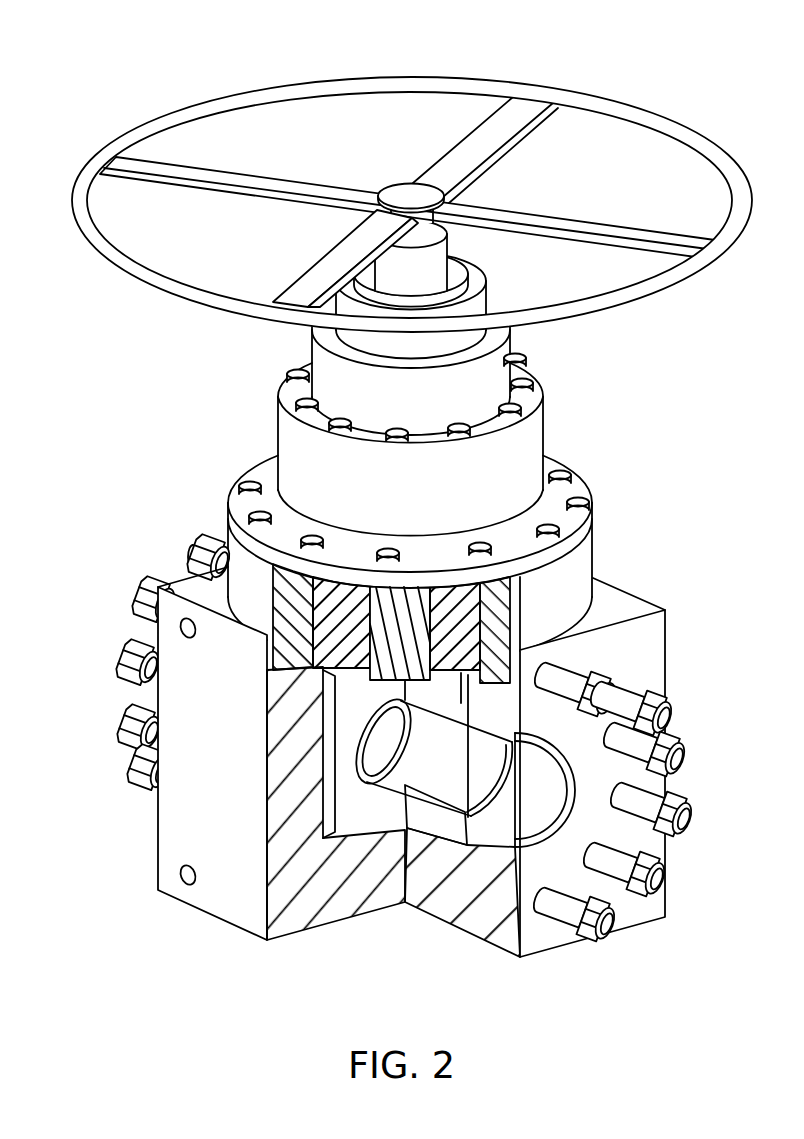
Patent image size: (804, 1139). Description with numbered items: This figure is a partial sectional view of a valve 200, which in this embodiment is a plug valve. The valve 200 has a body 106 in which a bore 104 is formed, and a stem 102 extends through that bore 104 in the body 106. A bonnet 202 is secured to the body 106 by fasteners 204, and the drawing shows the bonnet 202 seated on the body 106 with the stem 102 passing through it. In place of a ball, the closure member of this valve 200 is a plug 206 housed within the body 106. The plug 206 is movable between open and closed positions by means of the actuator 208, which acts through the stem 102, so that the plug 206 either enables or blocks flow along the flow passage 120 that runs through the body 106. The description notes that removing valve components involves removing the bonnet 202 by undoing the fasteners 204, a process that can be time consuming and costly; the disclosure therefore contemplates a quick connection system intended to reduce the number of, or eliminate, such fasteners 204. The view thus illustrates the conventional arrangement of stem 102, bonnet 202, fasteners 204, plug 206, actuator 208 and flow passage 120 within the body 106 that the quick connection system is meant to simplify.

The valve 200 is at (617, 44).
The stem 102 is at (417, 623).
The bore 104 is at (345, 620).
The body 106 is at (652, 656).
The flow passage 120 is at (540, 793).
The bonnet 202 is at (240, 608).
The fasteners 204 is at (195, 566).
The plug 206 is at (355, 787).
The actuator 208 is at (328, 380).